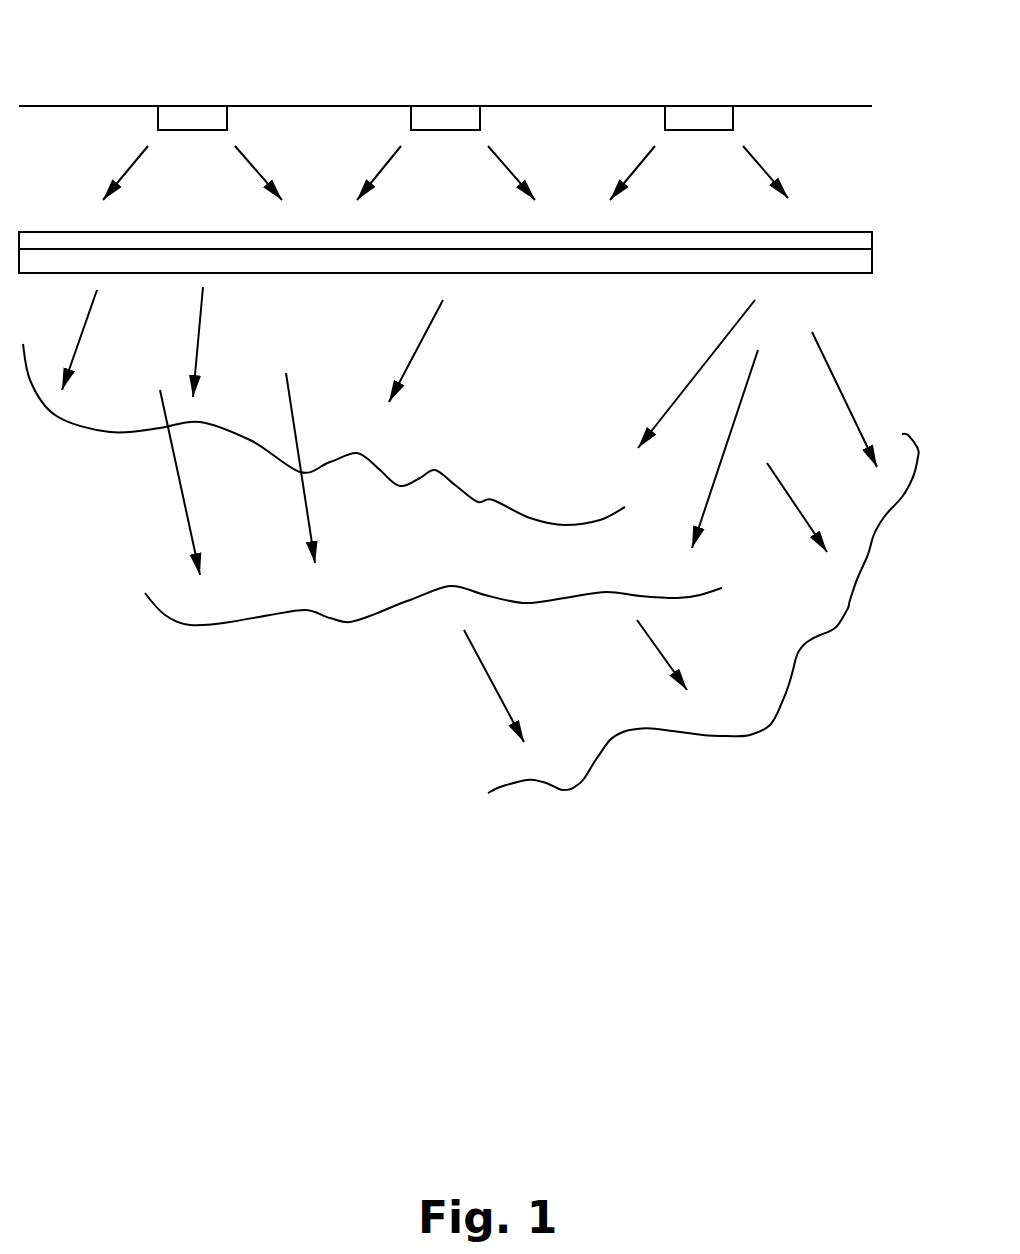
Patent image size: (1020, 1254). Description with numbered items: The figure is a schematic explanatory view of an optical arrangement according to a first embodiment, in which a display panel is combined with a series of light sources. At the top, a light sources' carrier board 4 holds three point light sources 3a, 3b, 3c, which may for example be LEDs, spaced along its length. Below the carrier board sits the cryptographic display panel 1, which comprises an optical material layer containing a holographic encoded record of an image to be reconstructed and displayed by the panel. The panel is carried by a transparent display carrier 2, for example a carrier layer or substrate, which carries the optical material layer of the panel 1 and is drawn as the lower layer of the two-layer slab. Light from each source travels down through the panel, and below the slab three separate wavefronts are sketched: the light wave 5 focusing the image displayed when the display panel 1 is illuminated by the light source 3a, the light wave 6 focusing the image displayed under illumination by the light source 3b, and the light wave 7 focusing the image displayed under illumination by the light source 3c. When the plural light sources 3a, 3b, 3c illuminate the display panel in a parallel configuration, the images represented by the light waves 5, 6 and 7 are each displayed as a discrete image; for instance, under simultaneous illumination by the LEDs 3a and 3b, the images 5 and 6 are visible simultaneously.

The cryptographic display panel 1 is at (476, 205).
The transparent display carrier 2 is at (476, 282).
The point light source 3a is at (159, 73).
The point light source 3b is at (412, 73).
The point light source 3c is at (666, 73).
The light sources' carrier board 4 is at (445, 56).
The light wave 5 is at (324, 434).
The light wave 6 is at (433, 631).
The light wave 7 is at (703, 613).